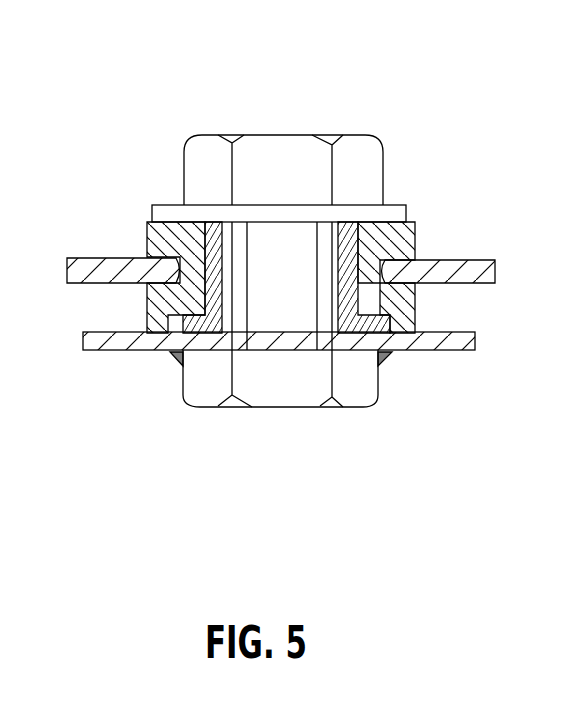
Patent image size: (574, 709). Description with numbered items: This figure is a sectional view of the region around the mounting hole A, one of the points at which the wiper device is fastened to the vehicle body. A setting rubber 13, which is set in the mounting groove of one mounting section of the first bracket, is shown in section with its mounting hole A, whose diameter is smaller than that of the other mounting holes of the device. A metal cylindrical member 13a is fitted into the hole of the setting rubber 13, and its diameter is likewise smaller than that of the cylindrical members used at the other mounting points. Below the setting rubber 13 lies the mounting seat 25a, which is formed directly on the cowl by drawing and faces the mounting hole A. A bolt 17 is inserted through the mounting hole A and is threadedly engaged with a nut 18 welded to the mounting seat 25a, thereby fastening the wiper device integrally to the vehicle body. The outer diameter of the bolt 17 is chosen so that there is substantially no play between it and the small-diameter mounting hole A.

The bolt 17 is at (283, 157).
The nut 18 is at (288, 378).
The metal cylindrical member 13a is at (212, 248).
The setting rubber 13 is at (167, 300).
The mounting seat 25a is at (430, 345).
The mounting hole A is at (225, 262).